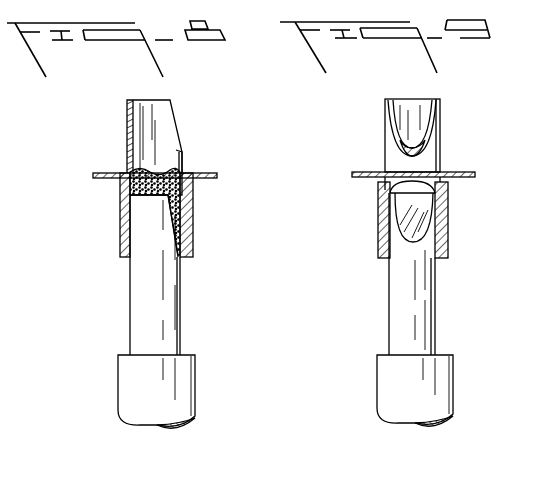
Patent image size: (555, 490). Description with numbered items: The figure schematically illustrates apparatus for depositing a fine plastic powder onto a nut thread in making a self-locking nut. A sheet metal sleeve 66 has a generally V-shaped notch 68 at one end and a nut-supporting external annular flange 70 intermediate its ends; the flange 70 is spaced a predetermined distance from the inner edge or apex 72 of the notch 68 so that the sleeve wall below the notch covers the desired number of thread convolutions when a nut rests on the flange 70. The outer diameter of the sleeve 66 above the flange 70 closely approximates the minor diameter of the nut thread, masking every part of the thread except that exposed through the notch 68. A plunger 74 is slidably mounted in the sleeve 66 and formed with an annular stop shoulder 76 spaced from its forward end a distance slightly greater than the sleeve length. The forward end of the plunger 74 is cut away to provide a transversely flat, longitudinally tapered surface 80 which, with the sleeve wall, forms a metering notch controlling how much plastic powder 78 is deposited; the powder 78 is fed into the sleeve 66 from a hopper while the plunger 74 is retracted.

In FIG. 8, the sheet metal sleeve 66 is at (120, 220).
In FIG. 9, the sheet metal sleeve 66 is at (380, 187).
In FIG. 8, the V-shaped notch 68 is at (172, 112).
In FIG. 9, the V-shaped notch 68 is at (440, 117).
In FIG. 8, the external annular flange 70 is at (110, 173).
In FIG. 9, the external annular flange 70 is at (370, 172).
In FIG. 8, the apex of the notch 72 is at (182, 153).
In FIG. 9, the apex of the notch 72 is at (440, 157).
In FIG. 8, the plunger 74 is at (140, 340).
In FIG. 9, the plunger 74 is at (397, 332).
In FIG. 8, the annular stop shoulder 76 is at (185, 357).
In FIG. 9, the annular stop shoulder 76 is at (447, 353).
In FIG. 8, the plastic powder 78 is at (175, 188).
In FIG. 8, the tapered surface 80 is at (164, 229).
In FIG. 9, the tapered surface 80 is at (423, 215).